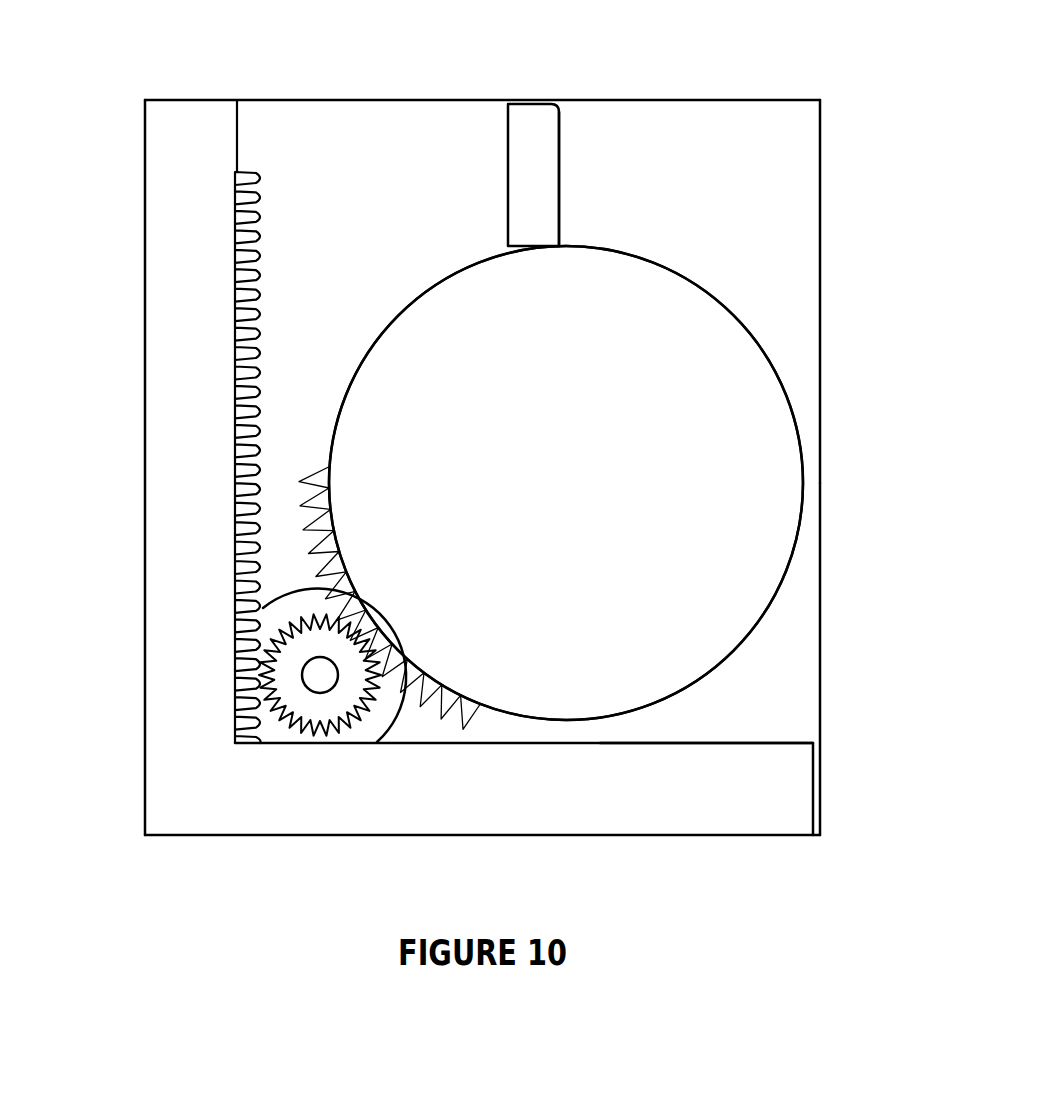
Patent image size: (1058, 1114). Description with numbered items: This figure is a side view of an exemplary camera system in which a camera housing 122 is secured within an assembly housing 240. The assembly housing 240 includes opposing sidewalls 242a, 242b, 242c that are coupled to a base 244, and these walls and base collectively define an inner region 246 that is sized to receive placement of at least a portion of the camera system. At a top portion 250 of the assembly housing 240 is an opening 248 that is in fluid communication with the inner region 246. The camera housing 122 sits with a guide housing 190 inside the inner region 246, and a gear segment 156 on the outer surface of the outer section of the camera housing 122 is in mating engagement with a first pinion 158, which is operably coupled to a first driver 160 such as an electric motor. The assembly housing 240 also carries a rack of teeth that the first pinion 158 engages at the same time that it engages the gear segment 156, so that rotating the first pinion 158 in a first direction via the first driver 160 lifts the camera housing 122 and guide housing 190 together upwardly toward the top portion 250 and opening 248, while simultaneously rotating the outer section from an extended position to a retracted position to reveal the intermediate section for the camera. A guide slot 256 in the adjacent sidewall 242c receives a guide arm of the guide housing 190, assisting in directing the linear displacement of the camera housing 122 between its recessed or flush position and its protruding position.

The camera housing 122 is at (733, 325).
The gear segment 156 is at (335, 555).
The first pinion 158 is at (310, 735).
The first driver 160 is at (383, 735).
The guide housing 190 is at (713, 620).
The assembly housing 240 is at (705, 810).
The sidewall 242a is at (817, 543).
The sidewall 242b is at (140, 493).
The sidewall 242c is at (675, 137).
The base 244 is at (607, 840).
The inner region 246 is at (780, 705).
The opening 248 is at (432, 105).
The top portion 250 is at (647, 98).
The guide slot 256 is at (535, 198).